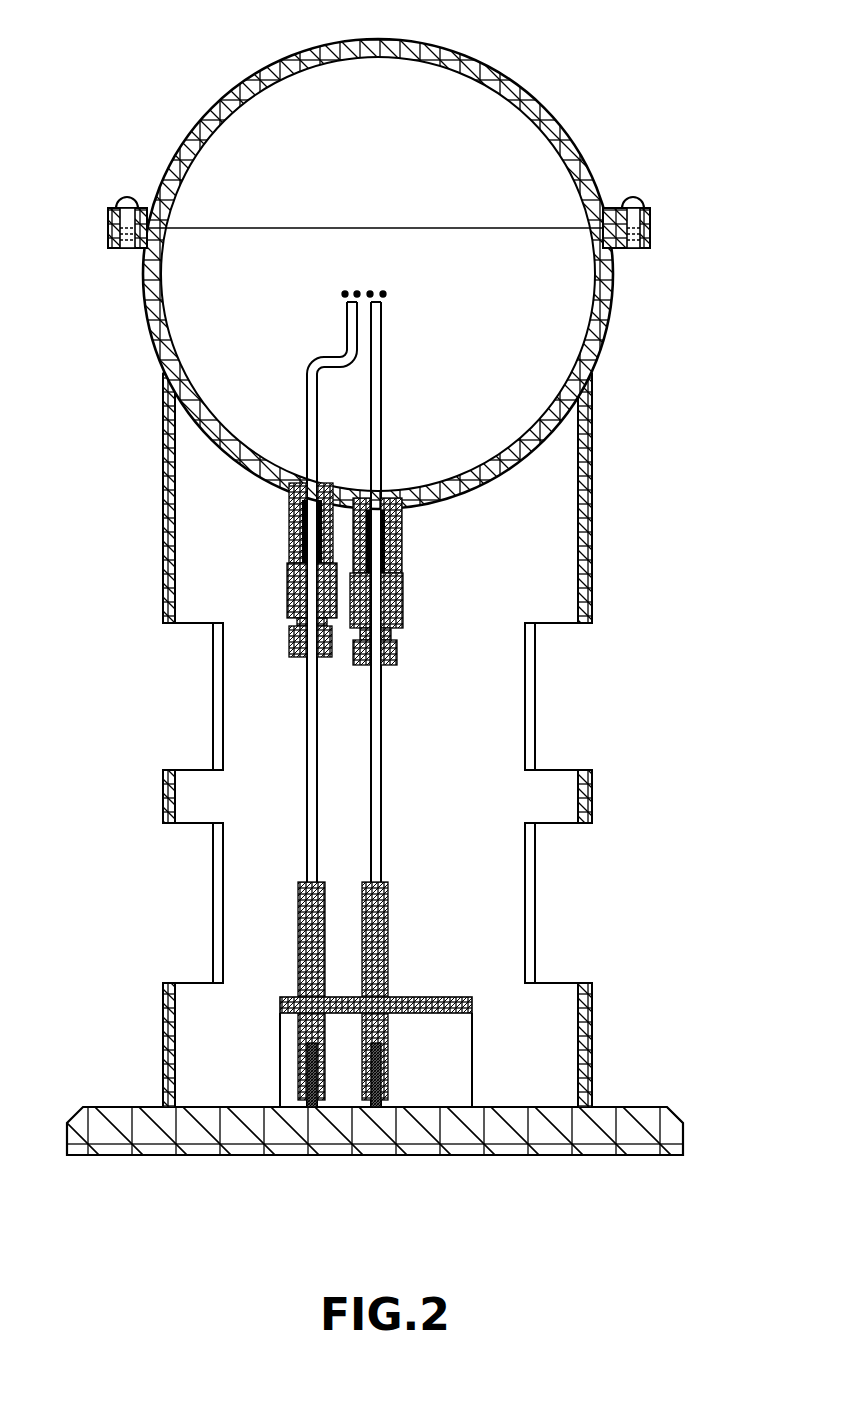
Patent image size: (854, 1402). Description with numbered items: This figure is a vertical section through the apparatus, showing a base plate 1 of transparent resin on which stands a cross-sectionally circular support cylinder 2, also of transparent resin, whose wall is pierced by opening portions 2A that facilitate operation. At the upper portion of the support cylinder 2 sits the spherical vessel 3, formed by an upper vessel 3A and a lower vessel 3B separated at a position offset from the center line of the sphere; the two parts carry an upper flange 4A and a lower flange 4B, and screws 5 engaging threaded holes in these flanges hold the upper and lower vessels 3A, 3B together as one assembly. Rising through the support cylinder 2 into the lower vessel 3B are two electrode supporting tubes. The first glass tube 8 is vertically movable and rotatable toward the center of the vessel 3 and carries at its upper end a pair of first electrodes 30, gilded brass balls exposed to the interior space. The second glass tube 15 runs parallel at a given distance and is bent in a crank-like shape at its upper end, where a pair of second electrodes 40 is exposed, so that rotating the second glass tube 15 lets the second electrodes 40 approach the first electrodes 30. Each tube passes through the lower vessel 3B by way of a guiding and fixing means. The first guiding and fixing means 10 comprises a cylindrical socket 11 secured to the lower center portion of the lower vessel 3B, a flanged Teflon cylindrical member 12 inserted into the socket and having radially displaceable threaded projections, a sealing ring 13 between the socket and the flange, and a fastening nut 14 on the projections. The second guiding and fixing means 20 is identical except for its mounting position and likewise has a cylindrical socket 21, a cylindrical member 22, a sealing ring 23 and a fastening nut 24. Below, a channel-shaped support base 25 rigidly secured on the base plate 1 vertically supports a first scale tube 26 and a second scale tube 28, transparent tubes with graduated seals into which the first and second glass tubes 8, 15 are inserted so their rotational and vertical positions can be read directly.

The base plate 1 is at (630, 1105).
The support cylinder 2 is at (593, 560).
The opening portions 2A is at (212, 694).
The vessel 3 is at (330, 254).
The upper vessel 3A is at (303, 56).
The lower vessel 3B is at (150, 311).
The upper flange 4A is at (650, 213).
The lower flange 4B is at (652, 246).
The screws 5 is at (427, 209).
The first glass tube 8 is at (382, 790).
The first guiding and fixing means 10 is at (456, 600).
The cylindrical socket 11 is at (404, 523).
The cylindrical member 12 is at (404, 617).
The sealing ring 13 is at (404, 573).
The fastening nut 14 is at (398, 665).
The second glass tube 15 is at (306, 788).
The second guiding and fixing means 20 is at (220, 592).
The cylindrical socket 21 is at (289, 505).
The cylindrical member 22 is at (289, 598).
The sealing ring 23 is at (288, 559).
The fastening nut 24 is at (286, 660).
The support base 25 is at (440, 997).
The first scale tube 26 is at (389, 915).
The second scale tube 28 is at (298, 915).
The first electrodes 30 is at (384, 292).
The second electrodes 40 is at (345, 292).